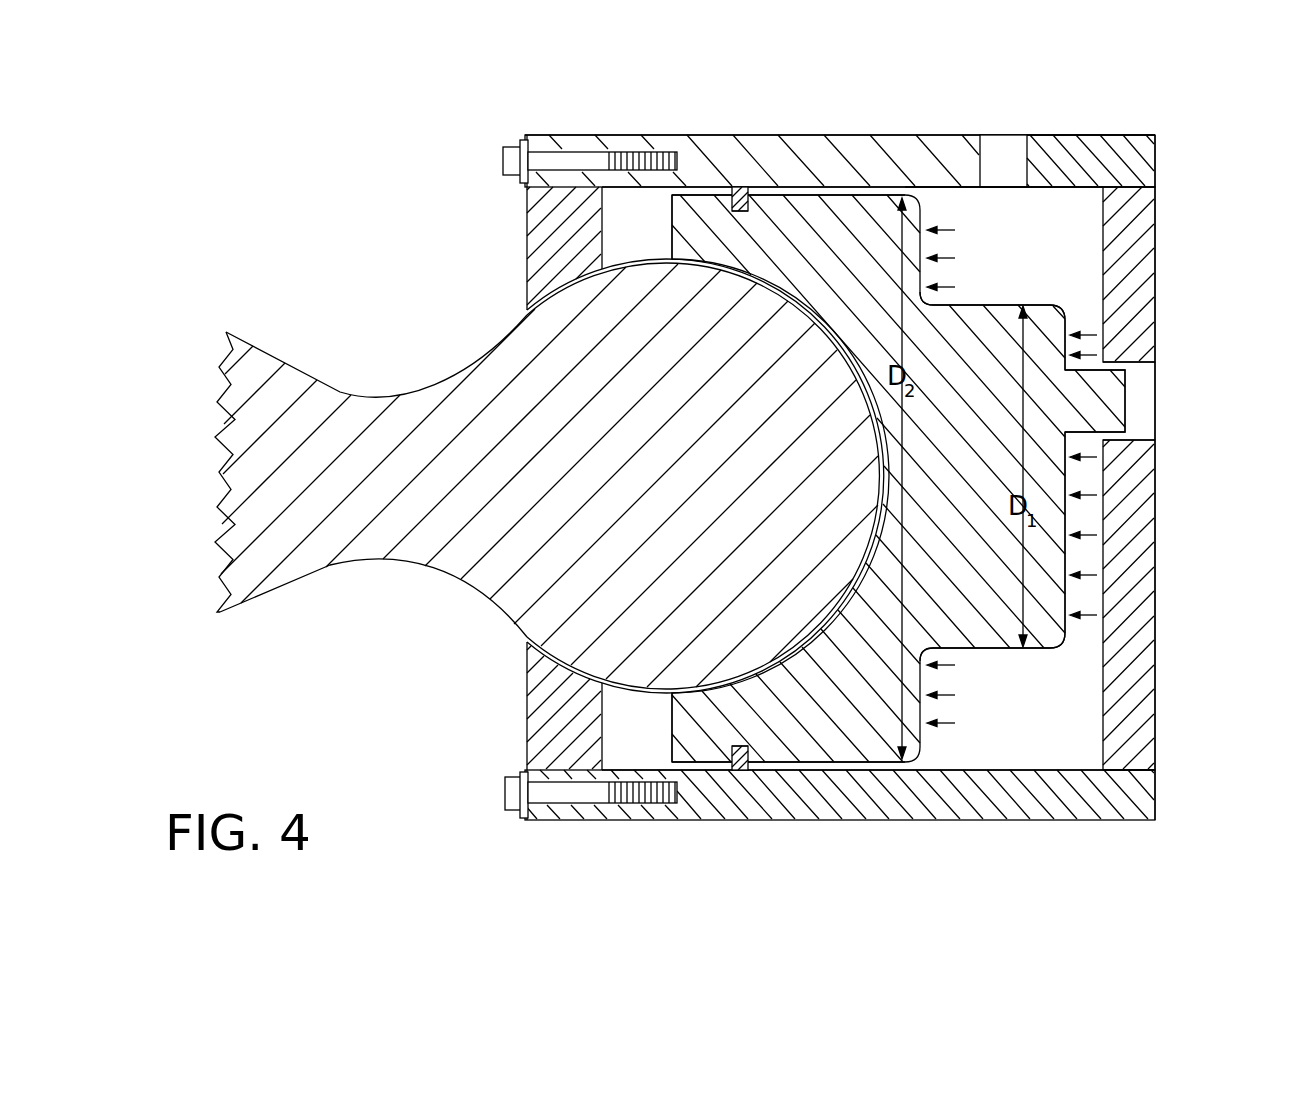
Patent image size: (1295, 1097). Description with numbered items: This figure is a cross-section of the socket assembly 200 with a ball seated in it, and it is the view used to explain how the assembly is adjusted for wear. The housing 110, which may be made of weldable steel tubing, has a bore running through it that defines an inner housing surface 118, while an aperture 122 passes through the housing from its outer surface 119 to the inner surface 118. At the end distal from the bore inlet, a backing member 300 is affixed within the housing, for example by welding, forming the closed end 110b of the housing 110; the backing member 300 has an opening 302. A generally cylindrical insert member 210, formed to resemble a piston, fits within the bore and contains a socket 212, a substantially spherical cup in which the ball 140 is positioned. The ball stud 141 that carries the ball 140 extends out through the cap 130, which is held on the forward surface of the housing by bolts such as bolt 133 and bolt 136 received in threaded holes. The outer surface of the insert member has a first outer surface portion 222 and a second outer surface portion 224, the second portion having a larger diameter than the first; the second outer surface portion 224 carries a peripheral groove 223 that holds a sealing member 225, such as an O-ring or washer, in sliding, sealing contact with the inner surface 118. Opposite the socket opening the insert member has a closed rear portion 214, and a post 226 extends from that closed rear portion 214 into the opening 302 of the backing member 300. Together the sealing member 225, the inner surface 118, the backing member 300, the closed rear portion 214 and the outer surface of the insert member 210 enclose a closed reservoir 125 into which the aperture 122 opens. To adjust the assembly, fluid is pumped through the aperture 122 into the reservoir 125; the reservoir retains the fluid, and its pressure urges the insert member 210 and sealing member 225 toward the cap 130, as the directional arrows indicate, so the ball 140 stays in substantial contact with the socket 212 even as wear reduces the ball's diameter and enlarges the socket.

The socket assembly 200 is at (776, 103).
The housing 110 is at (795, 820).
The closed end 110b is at (1168, 763).
The inner housing surface 118 is at (945, 192).
The outer surface 119 is at (1103, 137).
The aperture 122 is at (1003, 148).
The closed reservoir 125 is at (1070, 234).
The cap 130 is at (527, 715).
The bolt 133 is at (505, 795).
The bolt 136 is at (505, 160).
The ball 140 is at (563, 362).
The ball stud 141 is at (315, 558).
The insert member 210 is at (672, 730).
The socket 212 is at (678, 262).
The closed rear portion 214 is at (1074, 551).
The first outer surface portion 222 is at (985, 306).
The groove 223 is at (753, 203).
The second outer surface portion 224 is at (873, 762).
The sealing member 225 is at (735, 195).
The post 226 is at (1125, 392).
The backing member 300 is at (1158, 652).
The opening 302 is at (1150, 421).